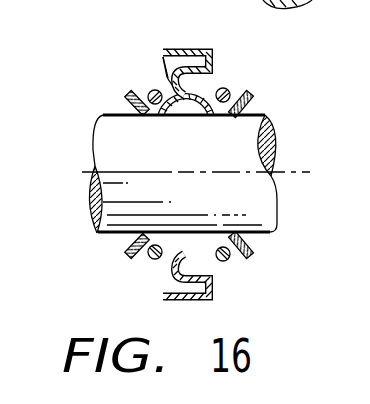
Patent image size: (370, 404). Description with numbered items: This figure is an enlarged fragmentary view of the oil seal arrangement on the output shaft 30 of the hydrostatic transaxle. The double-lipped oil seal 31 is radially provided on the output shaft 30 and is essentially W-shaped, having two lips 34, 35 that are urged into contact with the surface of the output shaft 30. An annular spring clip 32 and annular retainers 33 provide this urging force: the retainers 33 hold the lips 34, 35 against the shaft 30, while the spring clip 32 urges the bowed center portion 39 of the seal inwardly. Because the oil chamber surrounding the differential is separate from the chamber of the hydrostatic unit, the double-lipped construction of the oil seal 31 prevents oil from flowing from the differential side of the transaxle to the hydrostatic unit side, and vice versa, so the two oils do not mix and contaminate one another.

The output shaft 30 is at (197, 166).
The double-lipped oil seal 31 is at (133, 100).
The annular spring clip 32 is at (162, 51).
The annular retainers 33 is at (150, 90).
The lip 34 is at (155, 114).
The lip 35 is at (250, 244).
The bowed center portion 39 is at (184, 49).